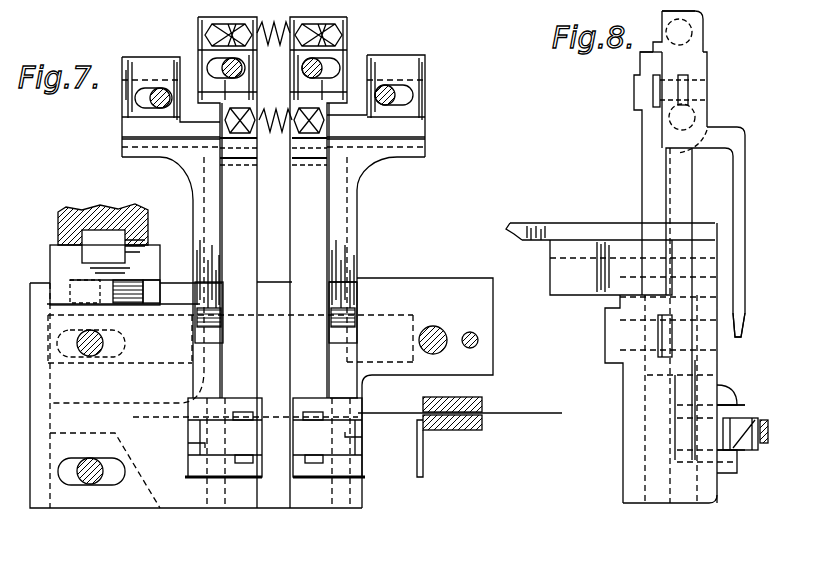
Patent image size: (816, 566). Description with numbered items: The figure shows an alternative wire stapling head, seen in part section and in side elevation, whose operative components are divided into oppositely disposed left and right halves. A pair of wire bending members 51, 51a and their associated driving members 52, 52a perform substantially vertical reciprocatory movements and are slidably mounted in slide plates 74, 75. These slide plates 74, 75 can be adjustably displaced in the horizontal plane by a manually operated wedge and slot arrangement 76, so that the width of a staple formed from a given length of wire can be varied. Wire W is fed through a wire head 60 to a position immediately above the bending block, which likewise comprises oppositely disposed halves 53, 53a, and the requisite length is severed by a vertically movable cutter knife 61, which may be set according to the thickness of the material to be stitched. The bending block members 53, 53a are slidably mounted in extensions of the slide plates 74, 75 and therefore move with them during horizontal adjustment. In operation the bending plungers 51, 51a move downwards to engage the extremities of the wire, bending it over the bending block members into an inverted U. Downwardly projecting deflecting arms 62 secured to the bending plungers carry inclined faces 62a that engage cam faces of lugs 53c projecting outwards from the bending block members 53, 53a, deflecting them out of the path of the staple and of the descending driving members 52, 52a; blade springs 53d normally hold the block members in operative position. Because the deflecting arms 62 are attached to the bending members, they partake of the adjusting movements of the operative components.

In FIG. 7, the wire bending member 51 is at (147, 72).
In FIG. 8, the wire bending member 51 is at (690, 88).
In FIG. 7, the wire bending member 51a is at (402, 62).
In FIG. 7, the driving member 52 is at (198, 33).
In FIG. 8, the driving member 52 is at (690, 32).
In FIG. 7, the driving member 52a is at (347, 28).
In FIG. 7, the bending block member 53 is at (243, 437).
In FIG. 8, the bending block member 53 is at (737, 448).
In FIG. 7, the bending block member 53a is at (313, 440).
In FIG. 7, the lug 53c is at (380, 443).
In FIG. 8, the lug 53c is at (745, 420).
In FIG. 8, the blade spring 53d is at (770, 445).
In FIG. 7, the wire head 60 is at (483, 405).
In FIG. 7, the cutter knife 61 is at (423, 470).
In FIG. 7, the deflecting arm 62 is at (203, 208).
In FIG. 8, the deflecting arm 62 is at (738, 200).
In FIG. 7, the inclined face 62a is at (213, 332).
In FIG. 8, the inclined face 62a is at (742, 318).
In FIG. 7, the slide plate 74 is at (493, 338).
In FIG. 8, the slide plate 74 is at (632, 392).
In FIG. 7, the slide plate 75 is at (88, 497).
In FIG. 8, the slide plate 75 is at (688, 497).
In FIG. 7, the wedge and slot arrangement 76 is at (101, 228).
In FIG. 8, the wedge and slot arrangement 76 is at (602, 228).
In FIG. 7, the workpiece W is at (525, 413).